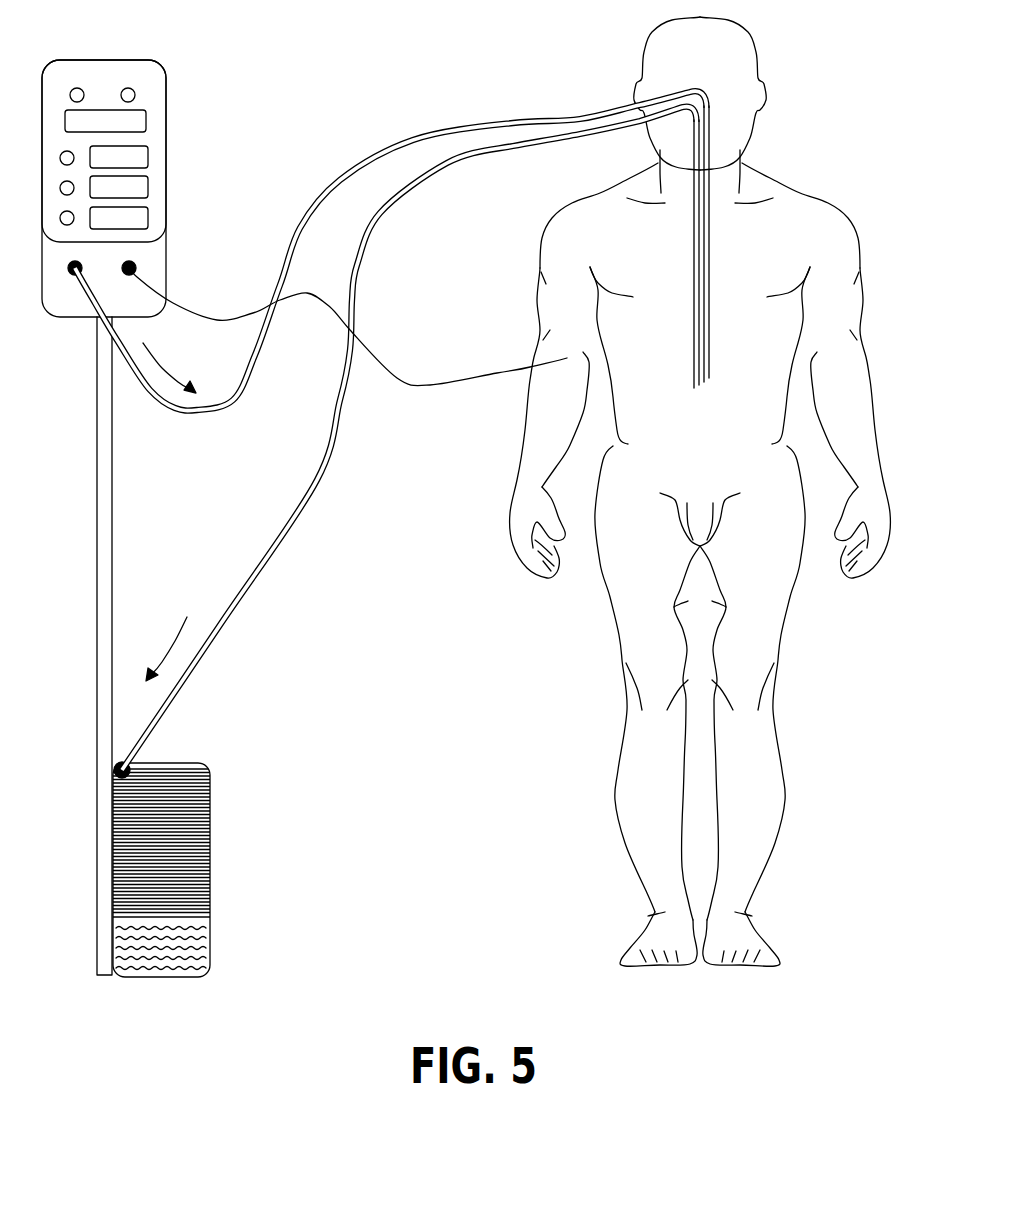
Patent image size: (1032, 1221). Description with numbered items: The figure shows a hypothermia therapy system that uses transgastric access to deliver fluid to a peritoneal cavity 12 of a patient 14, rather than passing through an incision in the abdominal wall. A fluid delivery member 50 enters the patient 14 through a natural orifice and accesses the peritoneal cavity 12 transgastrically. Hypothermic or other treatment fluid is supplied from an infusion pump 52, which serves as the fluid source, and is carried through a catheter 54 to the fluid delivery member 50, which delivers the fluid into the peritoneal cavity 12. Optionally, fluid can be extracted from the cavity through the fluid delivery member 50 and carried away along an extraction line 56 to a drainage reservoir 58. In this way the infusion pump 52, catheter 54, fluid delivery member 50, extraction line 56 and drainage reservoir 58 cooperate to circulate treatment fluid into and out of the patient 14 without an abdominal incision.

The peritoneal cavity 12 is at (700, 491).
The patient 14 is at (780, 213).
The fluid delivery member 50 is at (710, 308).
The infusion pump 52 is at (153, 95).
The catheter 54 is at (320, 193).
The extraction line 56 is at (270, 558).
The drainage reservoir 58 is at (183, 865).